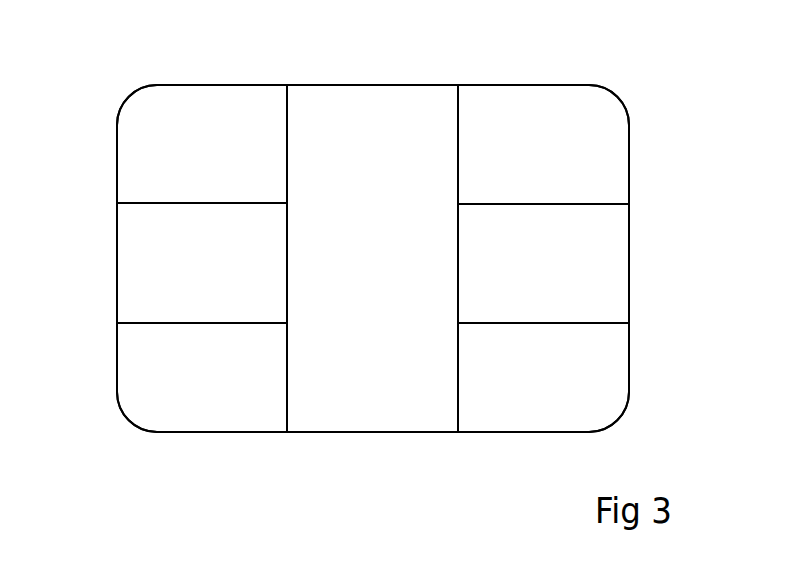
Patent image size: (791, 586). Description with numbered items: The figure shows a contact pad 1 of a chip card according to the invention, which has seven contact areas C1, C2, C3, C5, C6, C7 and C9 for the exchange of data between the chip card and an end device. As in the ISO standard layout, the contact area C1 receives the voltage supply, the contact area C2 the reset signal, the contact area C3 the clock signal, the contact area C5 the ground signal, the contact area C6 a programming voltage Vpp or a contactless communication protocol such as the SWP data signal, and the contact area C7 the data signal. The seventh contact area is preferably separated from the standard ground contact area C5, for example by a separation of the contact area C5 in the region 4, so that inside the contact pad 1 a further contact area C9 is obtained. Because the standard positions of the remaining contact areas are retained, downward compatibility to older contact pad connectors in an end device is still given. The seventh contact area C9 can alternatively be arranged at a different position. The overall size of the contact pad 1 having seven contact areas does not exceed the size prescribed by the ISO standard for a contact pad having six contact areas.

The contact pad 1 is at (310, 82).
The region of separation of contact area C5 4 is at (458, 127).
The contact area Vcc C1 is at (130, 130).
The contact area reset C2 is at (130, 273).
The contact area clock C3 is at (130, 381).
The contact area ground C5 is at (603, 135).
The contact area Vpp or SWP C6 is at (623, 231).
The contact area I/O C7 is at (623, 380).
The contact area new C9 is at (348, 385).